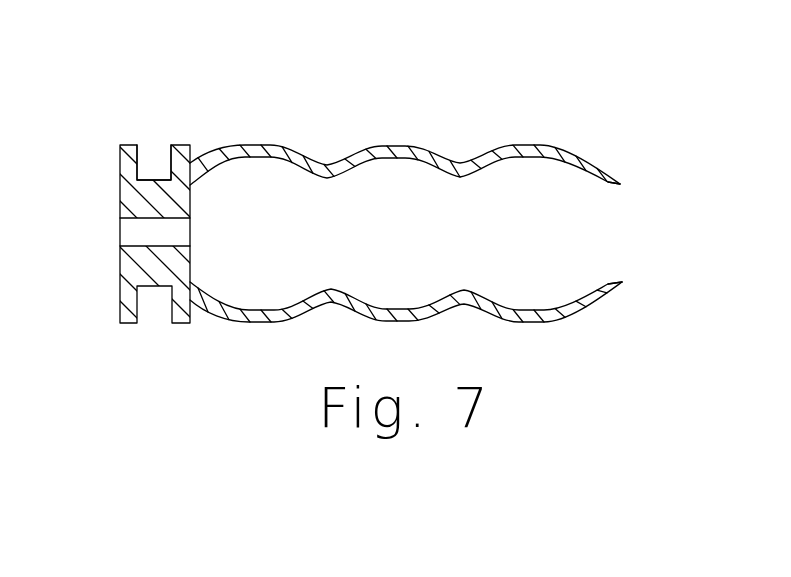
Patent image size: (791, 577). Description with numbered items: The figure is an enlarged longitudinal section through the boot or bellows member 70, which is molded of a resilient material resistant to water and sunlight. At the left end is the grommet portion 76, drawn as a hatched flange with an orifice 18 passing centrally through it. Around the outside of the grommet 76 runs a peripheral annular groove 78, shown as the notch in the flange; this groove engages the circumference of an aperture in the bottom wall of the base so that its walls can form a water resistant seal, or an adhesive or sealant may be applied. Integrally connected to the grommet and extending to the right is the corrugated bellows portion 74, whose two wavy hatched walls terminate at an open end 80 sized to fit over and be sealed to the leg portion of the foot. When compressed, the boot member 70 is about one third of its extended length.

The orifice 18 is at (133, 229).
The bellows member 70 is at (305, 131).
The bellows portion 74 is at (435, 148).
The grommet portion 76 is at (120, 184).
The peripheral annular groove 78 is at (153, 162).
The open end 80 is at (600, 250).